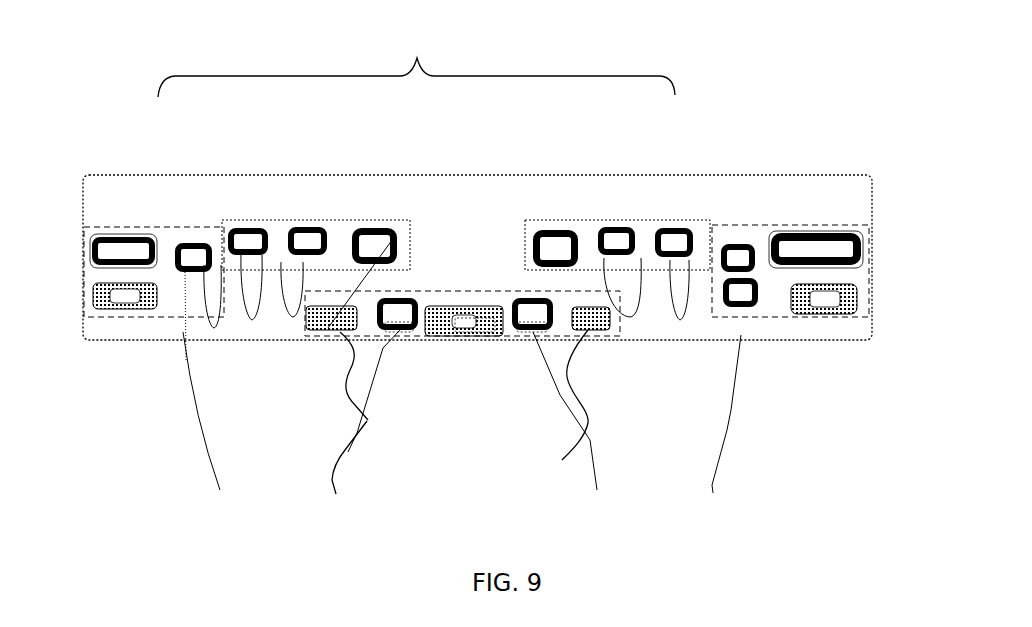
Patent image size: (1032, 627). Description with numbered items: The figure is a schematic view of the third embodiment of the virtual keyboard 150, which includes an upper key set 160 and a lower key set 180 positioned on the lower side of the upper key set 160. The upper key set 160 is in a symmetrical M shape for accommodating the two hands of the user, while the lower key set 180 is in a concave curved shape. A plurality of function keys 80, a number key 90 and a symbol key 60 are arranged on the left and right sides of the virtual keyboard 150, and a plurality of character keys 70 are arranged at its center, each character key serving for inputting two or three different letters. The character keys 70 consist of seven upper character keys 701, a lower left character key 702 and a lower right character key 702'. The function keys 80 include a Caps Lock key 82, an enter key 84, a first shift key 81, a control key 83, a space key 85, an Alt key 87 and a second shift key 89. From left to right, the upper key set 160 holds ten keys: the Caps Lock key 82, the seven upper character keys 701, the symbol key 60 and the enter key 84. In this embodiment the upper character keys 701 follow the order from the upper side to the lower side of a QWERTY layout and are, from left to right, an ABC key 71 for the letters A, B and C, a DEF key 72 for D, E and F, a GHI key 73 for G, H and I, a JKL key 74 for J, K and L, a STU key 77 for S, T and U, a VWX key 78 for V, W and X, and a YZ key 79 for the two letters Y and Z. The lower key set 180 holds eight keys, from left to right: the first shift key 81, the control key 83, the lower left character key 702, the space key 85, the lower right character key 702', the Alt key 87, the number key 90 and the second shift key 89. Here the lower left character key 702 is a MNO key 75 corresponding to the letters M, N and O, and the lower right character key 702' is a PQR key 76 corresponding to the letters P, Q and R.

The character keys 70 is at (416, 64).
The ABC key 71 is at (188, 242).
The DEF key 72 is at (250, 227).
The GHI key 73 is at (308, 225).
The JKL key 74 is at (388, 230).
The MNO key 75 is at (402, 332).
The PQR key 76 is at (520, 337).
The STU key 77 is at (553, 229).
The VWX key 78 is at (631, 225).
The YZ key 79 is at (680, 227).
The upper character keys 701 is at (363, 228).
The lower left character key 702 is at (402, 367).
The lower right character key 702' is at (508, 383).
The symbol key 60 is at (735, 243).
The function keys 80 is at (92, 242).
The first shift key 81 is at (117, 303).
The Caps Lock key 82 is at (117, 241).
The control key 83 is at (361, 413).
The enter key 84 is at (807, 232).
The space key 85 is at (467, 336).
The Alt key 87 is at (559, 404).
The second shift key 89 is at (833, 305).
The number key 90 is at (743, 298).
The virtual keyboard 150 is at (860, 173).
The upper key set 160 is at (144, 223).
The lower key set 180 is at (493, 339).